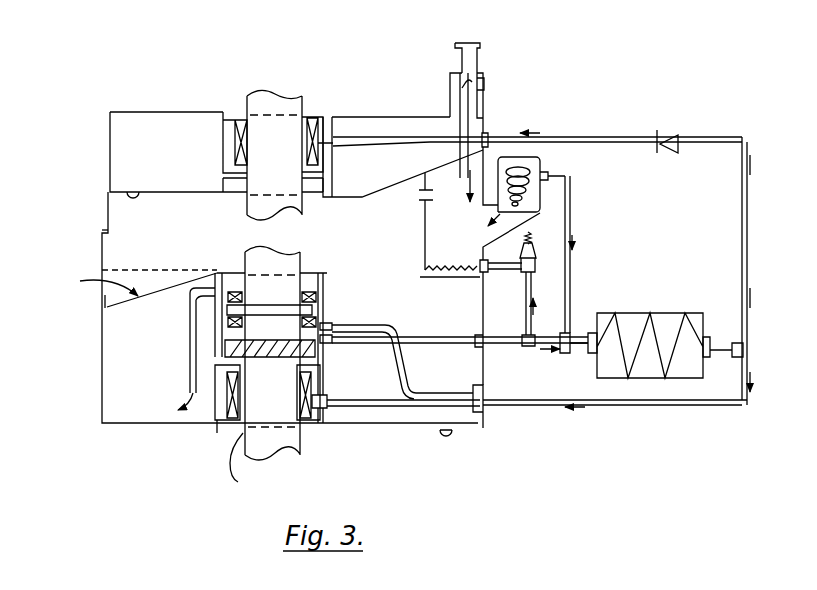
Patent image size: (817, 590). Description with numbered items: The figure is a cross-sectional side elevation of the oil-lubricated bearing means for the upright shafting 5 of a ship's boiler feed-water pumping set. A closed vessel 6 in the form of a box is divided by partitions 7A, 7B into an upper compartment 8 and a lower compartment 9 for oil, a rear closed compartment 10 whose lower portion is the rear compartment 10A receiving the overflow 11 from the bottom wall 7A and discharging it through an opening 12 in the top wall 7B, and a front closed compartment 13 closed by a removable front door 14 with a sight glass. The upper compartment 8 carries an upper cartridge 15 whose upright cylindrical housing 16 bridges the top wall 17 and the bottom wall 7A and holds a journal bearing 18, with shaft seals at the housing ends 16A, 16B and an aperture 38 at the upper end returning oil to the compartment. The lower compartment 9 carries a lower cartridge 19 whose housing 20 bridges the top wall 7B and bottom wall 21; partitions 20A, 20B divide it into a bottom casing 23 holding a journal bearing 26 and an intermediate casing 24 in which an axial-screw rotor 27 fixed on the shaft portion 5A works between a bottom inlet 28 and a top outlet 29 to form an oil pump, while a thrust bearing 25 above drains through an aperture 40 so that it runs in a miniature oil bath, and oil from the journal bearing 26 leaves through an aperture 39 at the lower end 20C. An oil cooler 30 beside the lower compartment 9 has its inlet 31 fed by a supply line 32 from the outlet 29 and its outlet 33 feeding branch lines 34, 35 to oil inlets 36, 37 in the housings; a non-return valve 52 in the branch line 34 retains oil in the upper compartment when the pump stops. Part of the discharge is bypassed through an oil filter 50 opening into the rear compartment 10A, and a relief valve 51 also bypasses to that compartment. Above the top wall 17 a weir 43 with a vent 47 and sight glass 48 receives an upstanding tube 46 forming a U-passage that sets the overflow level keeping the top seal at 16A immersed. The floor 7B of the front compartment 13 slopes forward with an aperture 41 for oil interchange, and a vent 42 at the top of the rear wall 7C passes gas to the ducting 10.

The shafting 5 is at (290, 385).
The shaft portion 5A is at (276, 170).
The closed vessel 6 is at (100, 193).
The partition 7A is at (403, 175).
The partition 7B is at (233, 273).
The rear wall 7C is at (425, 243).
The upper compartment 8 is at (182, 140).
The lower compartment 9 is at (157, 413).
The rear closed compartment 10 is at (471, 264).
The rear compartment 10A is at (540, 217).
The overflow 11 is at (463, 185).
The opening 12 is at (459, 273).
The front closed compartment 13 is at (165, 259).
The front door 14 is at (100, 234).
The upper cartridge 15 is at (338, 131).
The upright cylindrical housing 16 is at (223, 150).
The upper end of housing 16A is at (312, 118).
The lower end of housing 16B is at (237, 190).
The top wall 17 is at (147, 112).
The journal bearing 18 is at (322, 125).
The lower cartridge 19 is at (330, 388).
The upright cylindrical housing 20 is at (215, 386).
The partition 20A is at (333, 328).
The partition 20B is at (383, 384).
The lower end of housing 20C is at (307, 430).
The bottom wall 21 is at (214, 422).
The bottom casing 23 is at (242, 466).
The intermediate casing 24 is at (237, 338).
The thrust bearing 25 is at (311, 317).
The journal bearing 26 is at (225, 407).
The axial-screw rotor 27 is at (300, 352).
The bottom inlet 28 is at (208, 358).
The top outlet 29 is at (328, 341).
The oil cooler 30 is at (680, 370).
The cooler inlet 31 is at (591, 354).
The supply line 32 is at (493, 346).
The cooler outlet 33 is at (709, 337).
The branch line 34 is at (749, 199).
The branch line 35 is at (652, 405).
The oil inlet 36 is at (345, 147).
The oil inlet 37 is at (322, 325).
The aperture 38 is at (228, 120).
The aperture 39 is at (226, 421).
The aperture 40 is at (215, 297).
The aperture 41 is at (87, 291).
The vent 42 is at (422, 201).
The weir 43 is at (486, 107).
The upstanding tube 46 is at (490, 121).
The vent 47 is at (466, 43).
The sight glass 48 is at (487, 86).
The oil filter 50 is at (535, 172).
The relief valve 51 is at (536, 257).
The non-return valve 52 is at (672, 141).